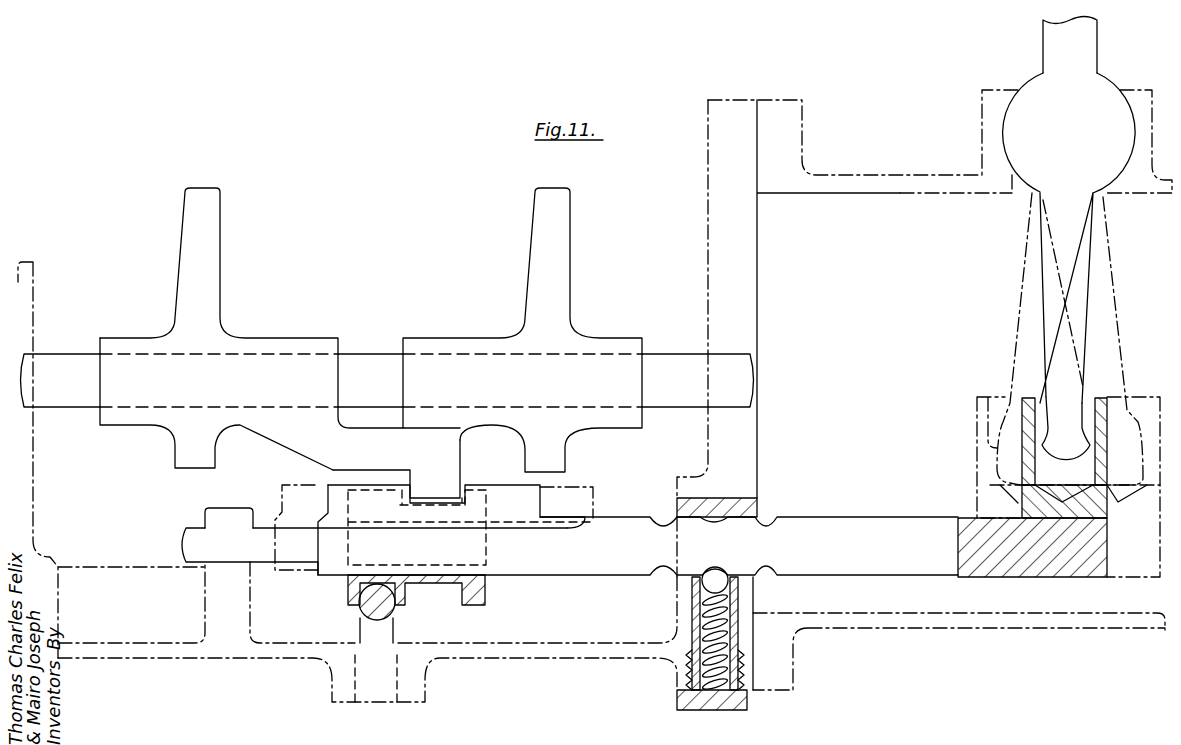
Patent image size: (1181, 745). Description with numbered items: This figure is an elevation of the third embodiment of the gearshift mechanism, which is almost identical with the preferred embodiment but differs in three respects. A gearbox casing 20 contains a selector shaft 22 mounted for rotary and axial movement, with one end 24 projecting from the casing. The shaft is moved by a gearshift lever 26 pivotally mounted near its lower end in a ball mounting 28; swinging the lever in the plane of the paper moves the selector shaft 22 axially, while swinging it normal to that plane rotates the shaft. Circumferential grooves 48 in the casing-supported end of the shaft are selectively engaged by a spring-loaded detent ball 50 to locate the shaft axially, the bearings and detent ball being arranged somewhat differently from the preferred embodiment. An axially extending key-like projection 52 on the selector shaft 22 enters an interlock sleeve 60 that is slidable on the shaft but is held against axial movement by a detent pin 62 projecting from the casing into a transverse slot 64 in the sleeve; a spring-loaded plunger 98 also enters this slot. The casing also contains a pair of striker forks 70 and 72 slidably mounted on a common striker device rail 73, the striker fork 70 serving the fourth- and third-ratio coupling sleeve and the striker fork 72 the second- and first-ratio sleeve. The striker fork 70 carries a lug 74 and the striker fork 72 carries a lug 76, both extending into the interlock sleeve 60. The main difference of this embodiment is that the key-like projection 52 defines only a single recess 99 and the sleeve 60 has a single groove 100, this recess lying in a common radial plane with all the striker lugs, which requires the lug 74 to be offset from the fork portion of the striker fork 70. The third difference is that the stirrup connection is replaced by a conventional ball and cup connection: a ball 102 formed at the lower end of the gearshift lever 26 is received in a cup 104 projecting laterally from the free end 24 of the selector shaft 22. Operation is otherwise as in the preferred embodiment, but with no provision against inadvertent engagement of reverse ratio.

The gearbox casing 20 is at (747, 450).
The selector shaft 22 is at (623, 562).
The end of the selector shaft 24 is at (1017, 557).
The gearshift lever 26 is at (1055, 38).
The ball mounting 28 is at (1017, 133).
The circumferential grooves 48 is at (690, 513).
The detent ball 50 is at (722, 585).
The axially extending key-like projection 52 is at (508, 497).
The interlock sleeve 60 is at (478, 595).
The detent pin 62 is at (362, 598).
The transverse slot 64 is at (400, 592).
The striker fork 70 is at (192, 222).
The striker fork 72 is at (545, 222).
The striker device rail 73 is at (72, 362).
The lug 74 is at (445, 488).
The lug 76 is at (411, 462).
The spring-loaded plunger 98 is at (368, 627).
The single recess 99 is at (446, 492).
The single groove 100 is at (449, 603).
The ball 102 is at (1058, 448).
The cup 104 is at (1027, 463).